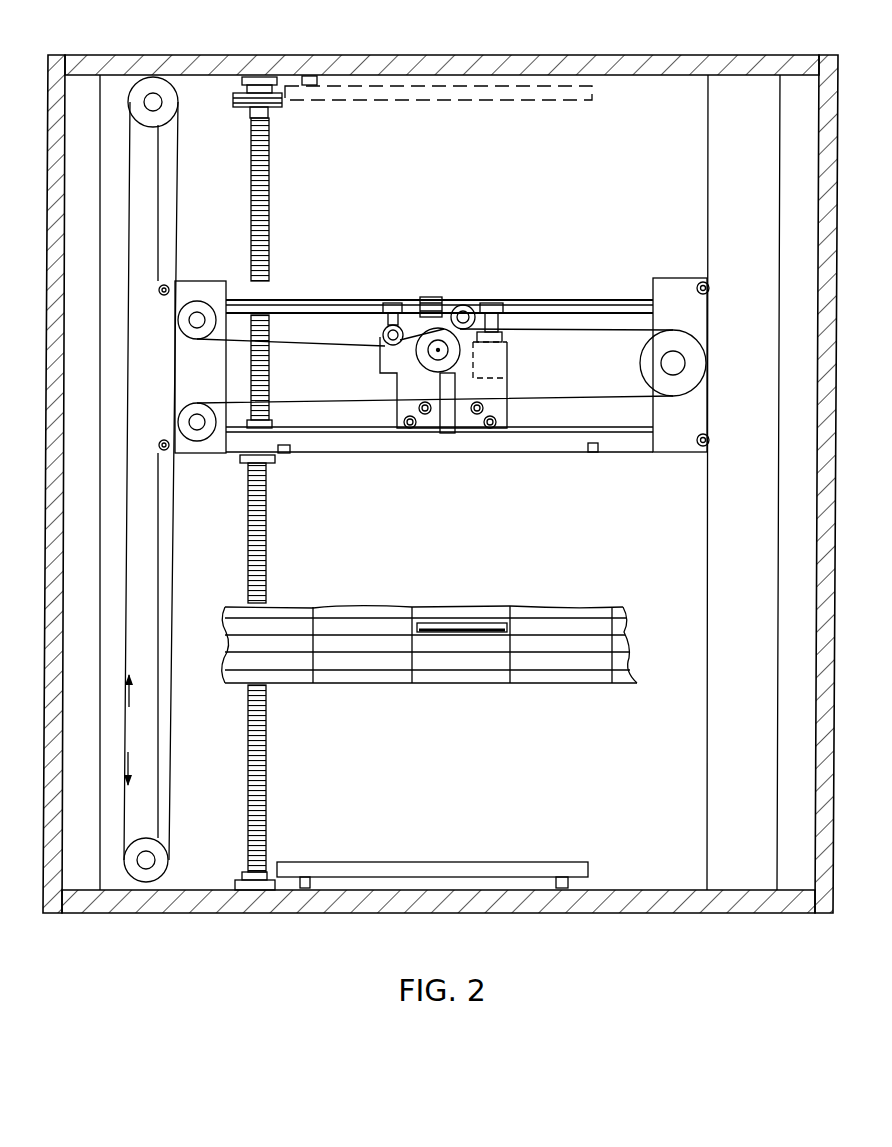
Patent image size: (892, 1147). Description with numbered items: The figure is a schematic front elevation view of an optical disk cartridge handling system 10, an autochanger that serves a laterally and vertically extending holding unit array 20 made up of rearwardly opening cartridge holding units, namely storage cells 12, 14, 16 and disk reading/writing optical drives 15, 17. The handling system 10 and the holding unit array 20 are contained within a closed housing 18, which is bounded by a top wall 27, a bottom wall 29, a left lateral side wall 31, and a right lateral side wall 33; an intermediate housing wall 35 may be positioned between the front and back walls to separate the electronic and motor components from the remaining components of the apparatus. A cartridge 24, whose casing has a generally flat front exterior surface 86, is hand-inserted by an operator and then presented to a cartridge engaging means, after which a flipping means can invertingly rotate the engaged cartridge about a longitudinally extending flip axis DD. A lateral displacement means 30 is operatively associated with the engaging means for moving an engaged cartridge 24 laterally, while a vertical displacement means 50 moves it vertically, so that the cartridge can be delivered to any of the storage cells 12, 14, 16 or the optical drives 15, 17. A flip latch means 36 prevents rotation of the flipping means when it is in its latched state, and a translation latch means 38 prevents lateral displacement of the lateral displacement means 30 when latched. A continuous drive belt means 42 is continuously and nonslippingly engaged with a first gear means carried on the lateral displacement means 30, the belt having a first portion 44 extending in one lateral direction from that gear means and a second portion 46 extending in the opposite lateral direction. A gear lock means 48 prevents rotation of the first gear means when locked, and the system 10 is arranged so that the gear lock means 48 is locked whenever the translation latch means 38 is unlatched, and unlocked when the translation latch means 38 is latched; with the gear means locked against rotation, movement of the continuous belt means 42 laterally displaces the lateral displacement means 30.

The optical disk cartridge handling system 10 is at (628, 192).
The storage cell 12 is at (290, 627).
The storage cell 14 is at (299, 647).
The optical drive 15 is at (495, 648).
The storage cell 16 is at (370, 629).
The optical drive 17 is at (585, 645).
The closed housing 18 is at (212, 52).
The holding unit array 20 is at (498, 690).
The cartridge 24 is at (448, 620).
The top wall 27 is at (366, 62).
The bottom wall 29 is at (316, 898).
The lateral displacement means 30 is at (392, 416).
The left lateral side wall 31 is at (66, 212).
The right lateral side wall 33 is at (819, 203).
The intermediate housing wall 35 is at (658, 98).
The flip latch means 36 is at (492, 366).
The translation latch means 38 is at (456, 436).
The continuous drive belt means 42 is at (128, 560).
The first portion of continuous belt means 44 is at (297, 338).
The second portion of continuous belt means 46 is at (558, 330).
The gear lock means 48 is at (462, 385).
The vertical displacement means 50 is at (275, 217).
The front exterior surface 86 is at (487, 626).
The flip axis DD is at (440, 348).